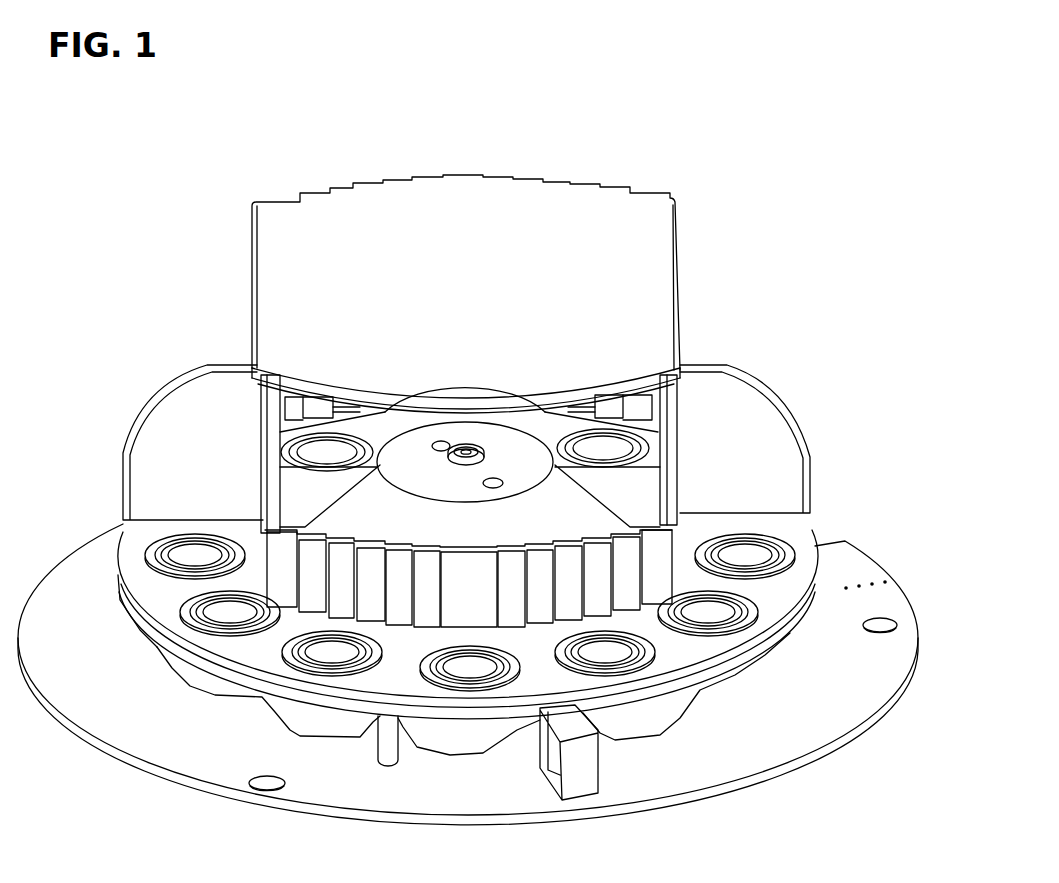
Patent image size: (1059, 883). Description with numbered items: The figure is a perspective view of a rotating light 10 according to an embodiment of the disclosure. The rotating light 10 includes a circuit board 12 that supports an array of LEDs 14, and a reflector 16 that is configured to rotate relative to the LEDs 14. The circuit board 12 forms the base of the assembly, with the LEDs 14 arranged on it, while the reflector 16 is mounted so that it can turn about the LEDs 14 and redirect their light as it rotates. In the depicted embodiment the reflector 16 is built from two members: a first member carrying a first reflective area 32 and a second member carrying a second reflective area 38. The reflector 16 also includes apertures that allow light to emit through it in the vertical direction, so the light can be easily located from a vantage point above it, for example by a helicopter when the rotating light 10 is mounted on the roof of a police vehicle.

The rotating light 10 is at (650, 155).
The circuit board 12 is at (843, 679).
The array of LEDs 14 is at (752, 552).
The reflector 16 is at (677, 231).
The first reflective area 32 is at (660, 550).
The second reflective area 38 is at (643, 402).